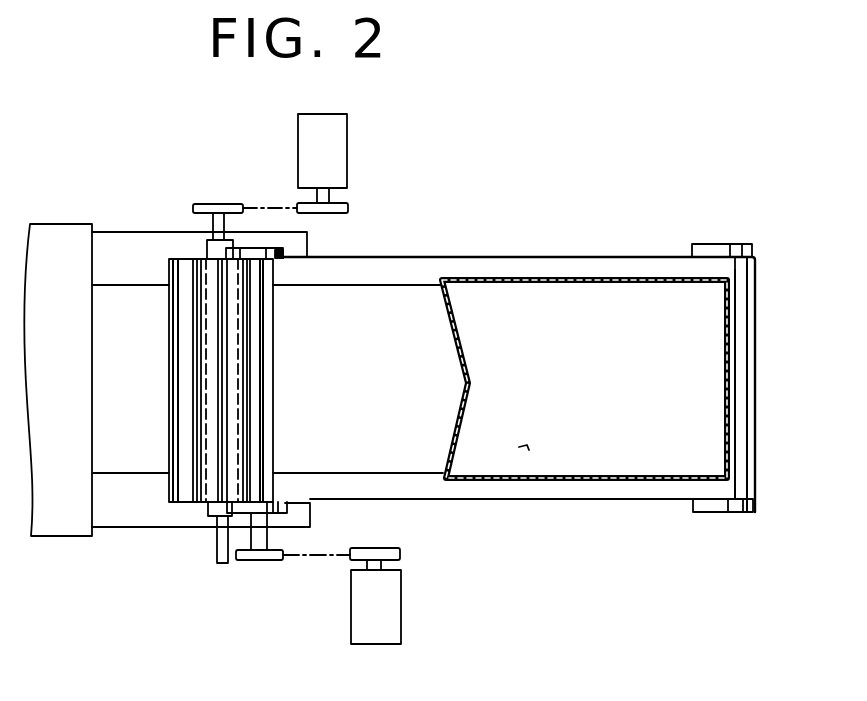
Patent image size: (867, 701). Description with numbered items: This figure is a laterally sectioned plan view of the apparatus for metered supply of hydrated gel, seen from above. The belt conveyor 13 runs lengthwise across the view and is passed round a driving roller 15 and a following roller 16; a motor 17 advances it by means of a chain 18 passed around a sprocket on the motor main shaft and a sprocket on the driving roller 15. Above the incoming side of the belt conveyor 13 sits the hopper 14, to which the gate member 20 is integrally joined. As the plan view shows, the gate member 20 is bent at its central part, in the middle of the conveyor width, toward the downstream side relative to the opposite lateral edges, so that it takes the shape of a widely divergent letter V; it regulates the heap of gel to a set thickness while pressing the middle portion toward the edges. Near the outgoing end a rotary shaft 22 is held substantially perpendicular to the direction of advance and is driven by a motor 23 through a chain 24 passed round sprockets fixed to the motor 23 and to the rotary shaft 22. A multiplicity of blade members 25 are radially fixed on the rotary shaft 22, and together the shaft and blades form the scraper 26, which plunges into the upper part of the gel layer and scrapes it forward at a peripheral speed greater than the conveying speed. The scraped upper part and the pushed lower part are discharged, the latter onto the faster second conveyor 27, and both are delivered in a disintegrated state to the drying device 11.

The drying device 11 is at (62, 525).
The belt conveyor 13 is at (562, 266).
The hopper 14 is at (728, 372).
The driving roller 15 is at (290, 508).
The following roller 16 is at (724, 514).
The motor 17 is at (390, 608).
The chain 18 is at (311, 560).
The gate member 20 is at (469, 398).
The rotary shaft 22 is at (212, 247).
The motor 23 is at (340, 152).
The chain 24 is at (266, 204).
The blade members 25 is at (180, 487).
The scraper 26 is at (284, 279).
The conveyor 27 is at (115, 240).